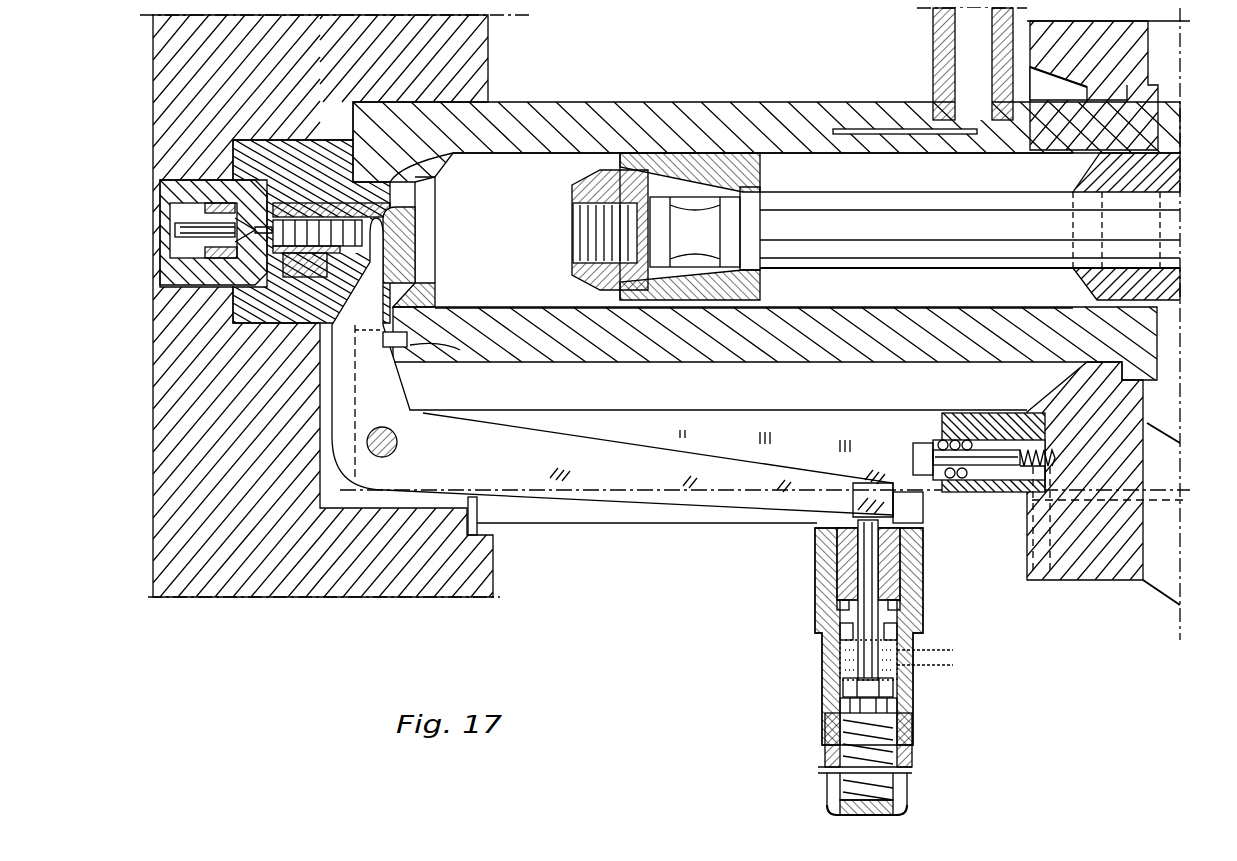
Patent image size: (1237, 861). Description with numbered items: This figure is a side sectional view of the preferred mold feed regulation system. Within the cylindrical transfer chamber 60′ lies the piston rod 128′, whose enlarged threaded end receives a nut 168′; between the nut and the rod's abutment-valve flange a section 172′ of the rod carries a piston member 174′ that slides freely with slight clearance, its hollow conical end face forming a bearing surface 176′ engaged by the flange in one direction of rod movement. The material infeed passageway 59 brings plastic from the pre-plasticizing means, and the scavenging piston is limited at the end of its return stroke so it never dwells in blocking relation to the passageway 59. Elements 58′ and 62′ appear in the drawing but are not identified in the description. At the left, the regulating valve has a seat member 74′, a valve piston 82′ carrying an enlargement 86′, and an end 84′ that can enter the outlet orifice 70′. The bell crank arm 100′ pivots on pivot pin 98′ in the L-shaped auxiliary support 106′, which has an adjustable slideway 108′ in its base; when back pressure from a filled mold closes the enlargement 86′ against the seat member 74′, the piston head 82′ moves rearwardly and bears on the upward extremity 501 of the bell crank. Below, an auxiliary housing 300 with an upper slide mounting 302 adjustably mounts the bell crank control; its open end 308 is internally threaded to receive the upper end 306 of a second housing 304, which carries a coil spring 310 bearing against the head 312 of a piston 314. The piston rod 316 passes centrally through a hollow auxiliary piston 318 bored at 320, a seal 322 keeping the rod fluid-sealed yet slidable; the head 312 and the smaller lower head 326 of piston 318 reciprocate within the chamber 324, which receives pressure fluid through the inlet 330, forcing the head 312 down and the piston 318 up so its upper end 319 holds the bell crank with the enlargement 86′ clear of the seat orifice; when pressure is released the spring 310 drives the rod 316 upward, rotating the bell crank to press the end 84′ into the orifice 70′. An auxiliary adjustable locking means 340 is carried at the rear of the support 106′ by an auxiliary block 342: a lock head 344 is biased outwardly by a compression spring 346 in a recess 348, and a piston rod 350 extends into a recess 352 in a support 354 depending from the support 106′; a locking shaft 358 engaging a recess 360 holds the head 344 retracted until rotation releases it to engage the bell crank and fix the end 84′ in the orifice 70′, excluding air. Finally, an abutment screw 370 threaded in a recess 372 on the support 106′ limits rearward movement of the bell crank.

The inlet passage posts 58′ is at (960, 43).
The material infeed passageway 59 is at (848, 134).
The cylindrical transfer chamber 60′ is at (956, 291).
The housing 62′ is at (517, 101).
The outlet orifice 70′ is at (170, 230).
The seat member 74′ is at (187, 287).
The valve piston 82′ is at (330, 200).
The end of the regulating piston 84′ is at (205, 250).
The enlargement 86′ is at (227, 218).
The pivot pin 98′ is at (388, 452).
The bell crank arm 100′ is at (337, 433).
The auxiliary support 106′ is at (735, 412).
The adjustable slideway 108′ is at (548, 522).
The piston rod 128′ is at (908, 213).
The nut 168′ is at (585, 193).
The section of the piston rod 172′ is at (703, 220).
The piston member 174′ is at (695, 160).
The bearing surface 176′ is at (753, 291).
The auxiliary housing 300 is at (918, 676).
The upper slide mounting 302 is at (898, 510).
The auxiliary housing 304 is at (823, 801).
The upper end 306 is at (832, 735).
The open end 308 is at (912, 745).
The coil spring 310 is at (905, 790).
The piston head 312 is at (843, 706).
The piston 314 is at (843, 691).
The piston rod 316 is at (862, 579).
The auxiliary piston 318 is at (843, 602).
The upper end 319 is at (853, 515).
The central bore 320 is at (915, 594).
The seal 322 is at (905, 575).
The chamber 324 is at (843, 662).
The lower head of the auxiliary piston 326 is at (843, 634).
The inlet 330 is at (960, 658).
The auxiliary adjustable locking means 340 is at (1063, 440).
The auxiliary block 342 is at (978, 500).
The lock head 344 is at (918, 446).
The compression spring 346 is at (945, 440).
The recess 348 is at (973, 478).
The piston rod 350 is at (985, 450).
The recess 352 is at (1030, 450).
The support 354 is at (1107, 572).
The locking shaft 358 is at (1048, 548).
The recess 360 is at (1183, 500).
The abutment screw 370 is at (395, 345).
The recess 372 is at (445, 348).
The upward extremity of the bell crank 501 is at (370, 235).